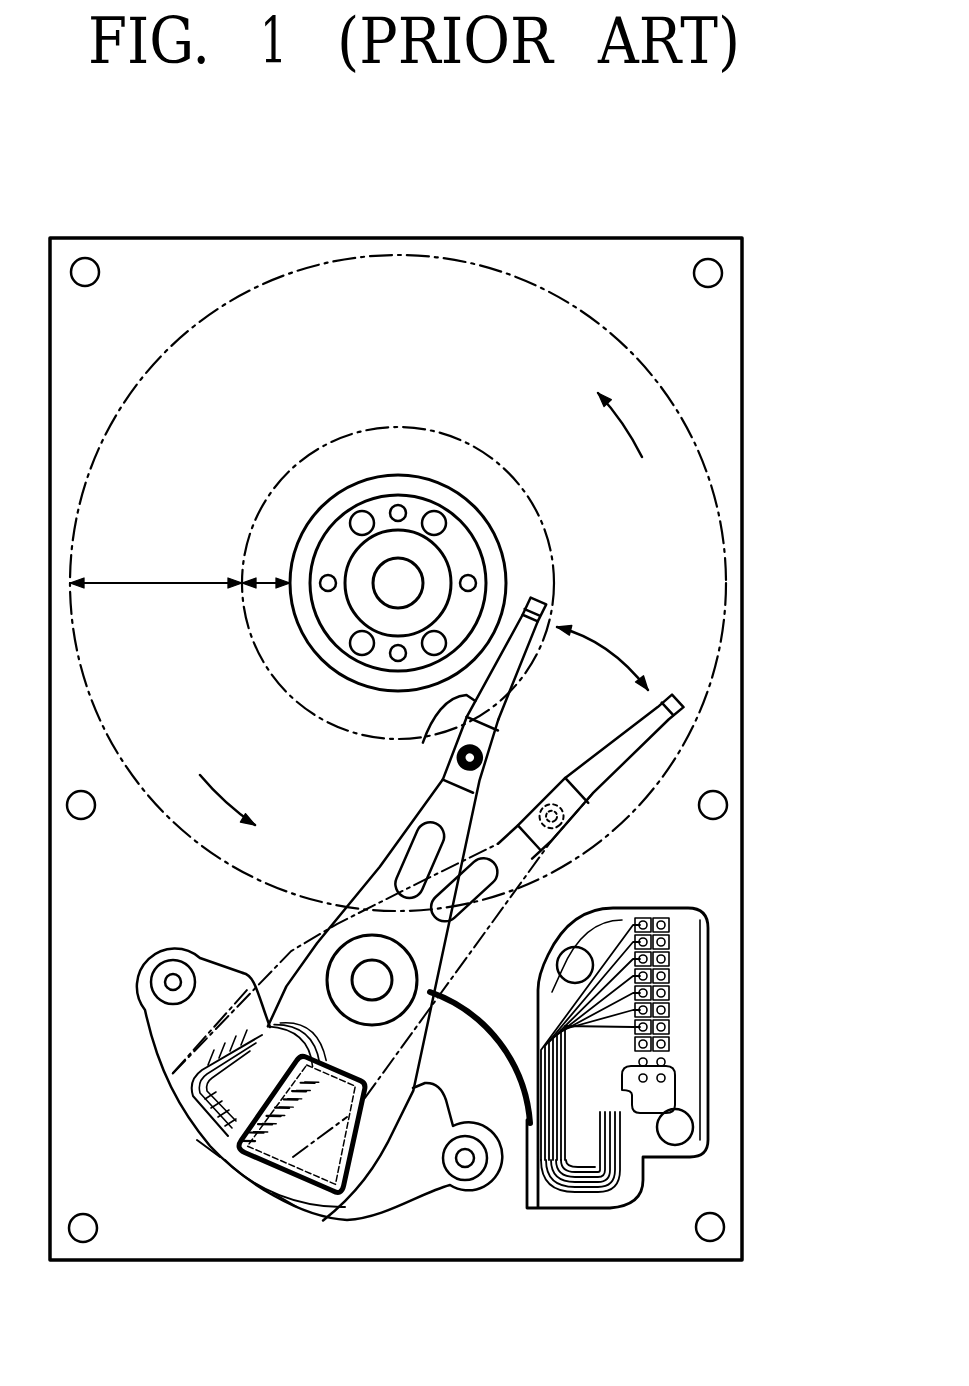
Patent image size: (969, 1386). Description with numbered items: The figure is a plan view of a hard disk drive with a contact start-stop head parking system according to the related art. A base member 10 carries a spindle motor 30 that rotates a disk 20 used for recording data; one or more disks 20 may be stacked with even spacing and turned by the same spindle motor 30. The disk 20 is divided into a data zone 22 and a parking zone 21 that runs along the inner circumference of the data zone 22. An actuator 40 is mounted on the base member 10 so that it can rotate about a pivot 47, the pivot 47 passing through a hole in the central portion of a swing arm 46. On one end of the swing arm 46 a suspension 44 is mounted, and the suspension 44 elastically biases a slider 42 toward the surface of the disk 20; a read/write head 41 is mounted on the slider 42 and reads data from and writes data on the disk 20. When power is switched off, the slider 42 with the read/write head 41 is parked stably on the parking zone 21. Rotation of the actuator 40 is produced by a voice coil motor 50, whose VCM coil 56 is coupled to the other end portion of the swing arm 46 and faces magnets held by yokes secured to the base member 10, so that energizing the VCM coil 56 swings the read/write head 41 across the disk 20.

The base member 10 is at (725, 360).
The disk 20 is at (697, 643).
The parking zone 21 is at (265, 583).
The data zone 22 is at (157, 583).
The spindle motor 30 is at (458, 542).
The actuator 40 is at (293, 950).
The read/write head 41 is at (540, 603).
The slider 42 is at (558, 614).
The suspension 44 is at (423, 743).
The swing arm 46 is at (387, 863).
The pivot 47 is at (380, 977).
The voice coil motor 50 is at (434, 1207).
The VCM coil 56 is at (330, 1232).